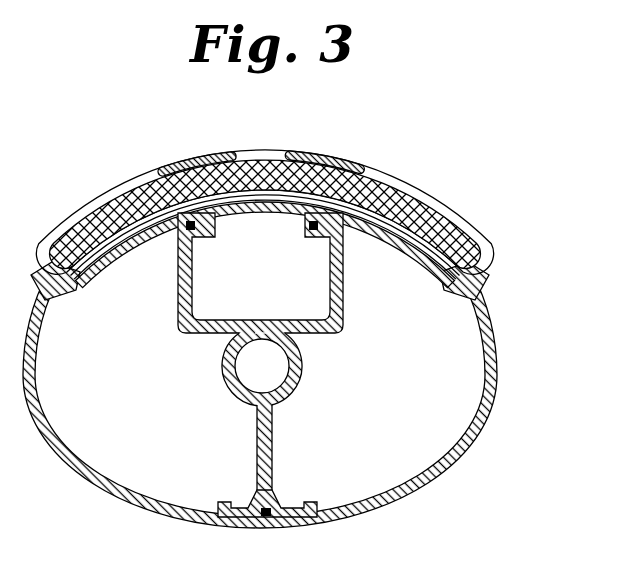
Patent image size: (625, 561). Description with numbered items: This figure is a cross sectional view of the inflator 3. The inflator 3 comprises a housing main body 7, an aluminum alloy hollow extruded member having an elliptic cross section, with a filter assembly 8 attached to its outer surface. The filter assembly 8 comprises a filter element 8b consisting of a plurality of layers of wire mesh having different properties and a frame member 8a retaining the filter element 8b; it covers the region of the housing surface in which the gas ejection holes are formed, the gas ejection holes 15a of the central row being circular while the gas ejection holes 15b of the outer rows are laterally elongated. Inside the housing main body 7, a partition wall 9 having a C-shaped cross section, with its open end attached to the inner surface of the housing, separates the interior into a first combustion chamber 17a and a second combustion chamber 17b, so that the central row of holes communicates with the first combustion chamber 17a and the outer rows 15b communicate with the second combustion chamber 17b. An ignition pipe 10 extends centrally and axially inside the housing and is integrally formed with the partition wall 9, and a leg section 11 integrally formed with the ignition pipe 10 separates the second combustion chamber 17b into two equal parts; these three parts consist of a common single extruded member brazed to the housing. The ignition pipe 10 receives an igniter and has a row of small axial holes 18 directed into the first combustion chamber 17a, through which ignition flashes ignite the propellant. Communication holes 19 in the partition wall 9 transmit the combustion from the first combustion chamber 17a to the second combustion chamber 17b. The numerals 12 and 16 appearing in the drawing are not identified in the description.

The inflator 3 is at (456, 129).
The housing main body 7 is at (497, 388).
The filter assembly 8 is at (313, 214).
The frame member 8a is at (485, 230).
The filter element 8b is at (435, 192).
The partition wall 9 is at (346, 300).
The ignition pipe 10 is at (304, 378).
The leg section 11 is at (310, 458).
The support member 12 is at (315, 365).
The gas ejection holes of the central row 15a is at (268, 201).
The gas ejection holes of the outer rows 15b is at (108, 248).
The spacer strip 16 is at (231, 153).
The first combustion chamber 17a is at (276, 270).
The second combustion chamber 17b is at (435, 311).
The axial holes 18 is at (263, 333).
The communication holes 19 is at (190, 336).